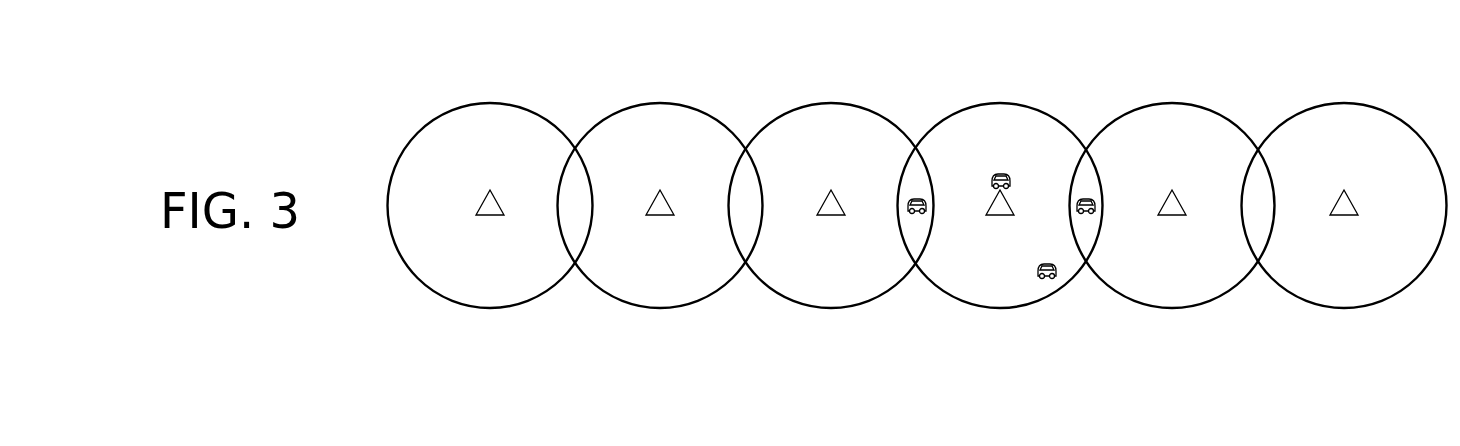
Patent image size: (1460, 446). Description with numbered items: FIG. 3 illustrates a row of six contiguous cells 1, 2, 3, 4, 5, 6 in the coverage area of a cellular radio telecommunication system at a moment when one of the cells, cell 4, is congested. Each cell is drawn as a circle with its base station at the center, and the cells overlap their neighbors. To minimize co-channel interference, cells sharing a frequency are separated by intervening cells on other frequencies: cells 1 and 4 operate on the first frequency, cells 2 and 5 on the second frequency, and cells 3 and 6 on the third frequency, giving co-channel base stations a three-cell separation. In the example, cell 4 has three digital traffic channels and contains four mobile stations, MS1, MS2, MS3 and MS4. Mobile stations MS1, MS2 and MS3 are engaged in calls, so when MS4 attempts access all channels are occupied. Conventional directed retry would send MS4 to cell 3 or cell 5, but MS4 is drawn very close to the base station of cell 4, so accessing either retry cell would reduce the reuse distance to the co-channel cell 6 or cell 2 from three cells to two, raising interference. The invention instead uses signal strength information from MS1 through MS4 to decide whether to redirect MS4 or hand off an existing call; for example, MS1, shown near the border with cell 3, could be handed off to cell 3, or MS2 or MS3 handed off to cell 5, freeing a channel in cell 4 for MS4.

The cell 1 is at (500, 307).
The cell 2 is at (668, 307).
The cell 3 is at (840, 307).
The cell 4 is at (1010, 307).
The cell 5 is at (1181, 307).
The cell 6 is at (1352, 307).
The mobile station MS1 is at (917, 193).
The mobile station MS2 is at (1087, 193).
The mobile station MS3 is at (1048, 258).
The mobile station MS4 is at (1001, 168).